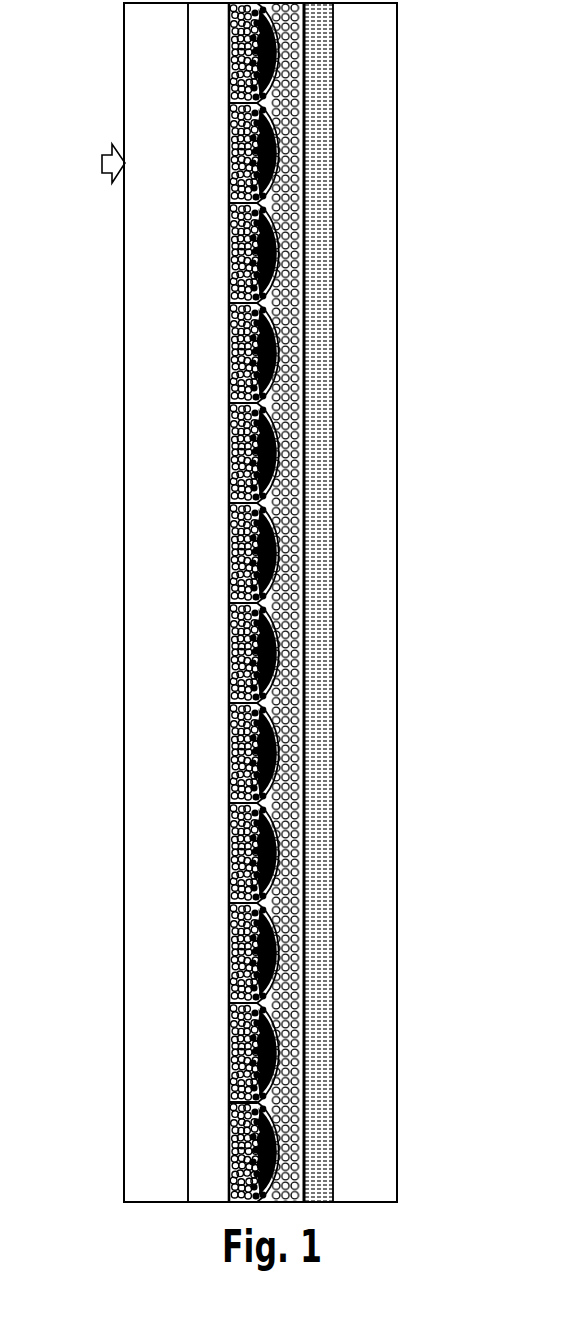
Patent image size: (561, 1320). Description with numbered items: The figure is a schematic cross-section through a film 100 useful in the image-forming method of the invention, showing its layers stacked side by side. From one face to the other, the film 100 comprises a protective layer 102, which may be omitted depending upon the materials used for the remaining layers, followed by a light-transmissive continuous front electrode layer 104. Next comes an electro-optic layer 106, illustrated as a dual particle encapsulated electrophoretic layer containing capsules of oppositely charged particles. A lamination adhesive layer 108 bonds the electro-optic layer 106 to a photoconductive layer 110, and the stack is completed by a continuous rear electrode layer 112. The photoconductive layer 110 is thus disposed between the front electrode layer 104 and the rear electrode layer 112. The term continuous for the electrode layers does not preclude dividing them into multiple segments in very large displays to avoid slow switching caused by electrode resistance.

The film 100 is at (225, 602).
The protective layer 102 is at (165, 1117).
The light-transmissive continuous front electrode layer 104 is at (212, 1032).
The electro-optic layer 106 is at (230, 957).
The lamination adhesive layer 108 is at (293, 958).
The photoconductive layer 110 is at (320, 1032).
The continuous rear electrode layer 112 is at (375, 1095).